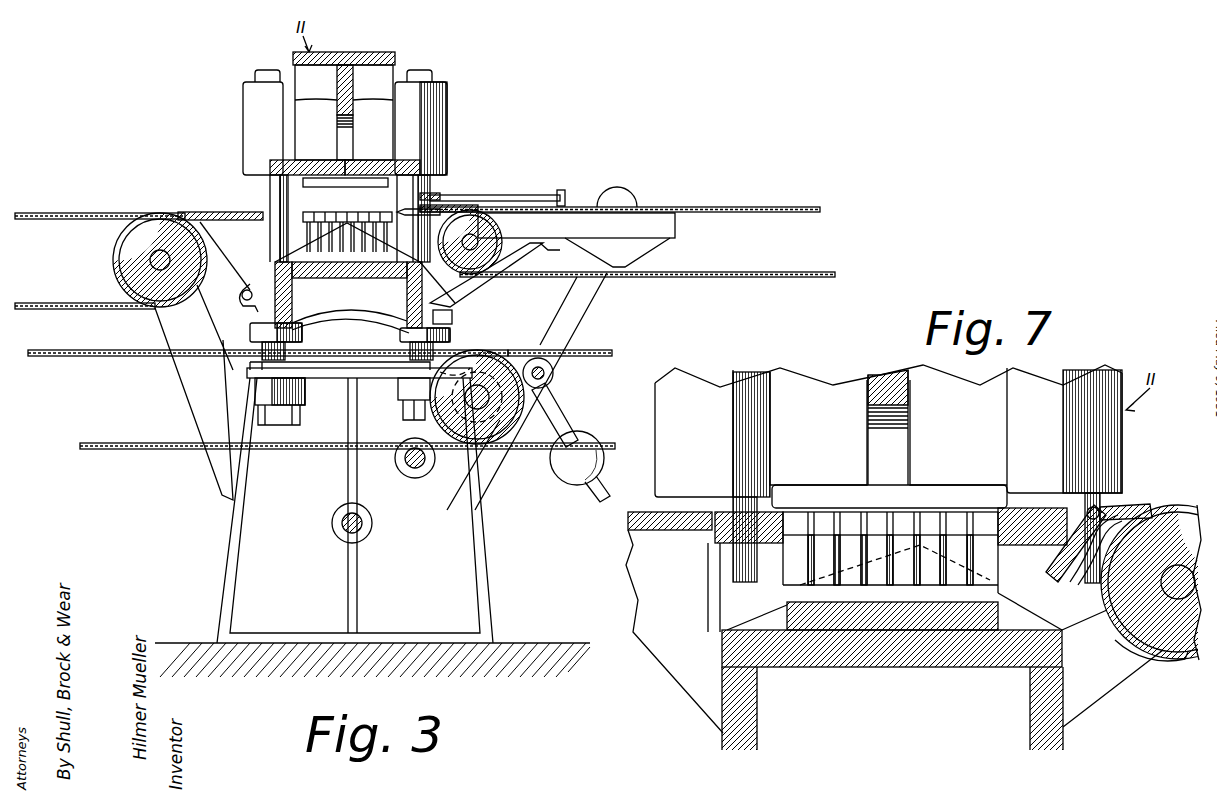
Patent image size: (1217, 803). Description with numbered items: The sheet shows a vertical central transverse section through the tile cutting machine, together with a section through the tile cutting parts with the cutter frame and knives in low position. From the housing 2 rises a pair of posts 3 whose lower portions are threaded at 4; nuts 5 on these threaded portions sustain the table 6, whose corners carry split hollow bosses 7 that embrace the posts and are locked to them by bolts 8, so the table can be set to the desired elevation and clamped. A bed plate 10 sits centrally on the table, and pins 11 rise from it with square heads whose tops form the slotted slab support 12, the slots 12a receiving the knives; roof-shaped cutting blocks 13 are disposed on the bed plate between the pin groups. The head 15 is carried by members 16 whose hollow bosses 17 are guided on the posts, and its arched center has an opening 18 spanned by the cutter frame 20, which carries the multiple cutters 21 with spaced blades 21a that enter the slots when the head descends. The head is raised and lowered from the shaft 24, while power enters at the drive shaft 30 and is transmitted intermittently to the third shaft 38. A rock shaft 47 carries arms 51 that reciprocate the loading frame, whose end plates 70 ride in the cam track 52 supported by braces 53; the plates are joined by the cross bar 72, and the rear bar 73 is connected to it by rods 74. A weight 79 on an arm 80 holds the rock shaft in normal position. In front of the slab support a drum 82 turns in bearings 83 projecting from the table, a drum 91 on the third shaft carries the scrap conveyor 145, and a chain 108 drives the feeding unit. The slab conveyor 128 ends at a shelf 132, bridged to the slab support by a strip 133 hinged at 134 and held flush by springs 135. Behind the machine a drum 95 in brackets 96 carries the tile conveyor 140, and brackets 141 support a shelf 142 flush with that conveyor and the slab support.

In FIG. 3, the housing 2 is at (252, 575).
In FIG. 3, the posts 3 is at (422, 70).
In FIG. 7, the posts 3 is at (927, 476).
In FIG. 3, the threaded portion 4 is at (403, 338).
In FIG. 3, the nuts 5 is at (302, 333).
In FIG. 3, the table 6 is at (366, 268).
In FIG. 7, the table 6 is at (962, 667).
In FIG. 3, the split hollow bosses 7 is at (248, 310).
In FIG. 3, the bolts 8 is at (242, 294).
In FIG. 7, the bed plate 10 is at (855, 630).
In FIG. 3, the pins 11 is at (312, 233).
In FIG. 7, the pins 11 is at (975, 578).
In FIG. 3, the slab support 12 is at (318, 214).
In FIG. 7, the slab support 12 is at (968, 520).
In FIG. 7, the slots 12a is at (808, 522).
In FIG. 3, the cutting blocks 13 is at (332, 266).
In FIG. 7, the cutting blocks 13 is at (775, 607).
In FIG. 3, the head 15 is at (376, 52).
In FIG. 7, the members 16 is at (888, 428).
In FIG. 3, the hollow bosses 17 is at (243, 133).
In FIG. 7, the hollow bosses 17 is at (888, 432).
In FIG. 3, the opening 18 is at (353, 130).
In FIG. 7, the opening 18 is at (910, 436).
In FIG. 3, the cutter frame 20 is at (319, 160).
In FIG. 7, the cutter frame 20 is at (715, 540).
In FIG. 3, the multiple cutters 21 is at (370, 160).
In FIG. 7, the multiple cutters 21 is at (1020, 505).
In FIG. 3, the blades 21a is at (332, 188).
In FIG. 7, the blades 21a is at (890, 508).
In FIG. 3, the shaft 24 is at (372, 523).
In FIG. 3, the drive shaft 30 is at (420, 478).
In FIG. 3, the third shaft 38 is at (465, 395).
In FIG. 3, the rock shaft 47 is at (553, 373).
In FIG. 3, the arms 51 is at (580, 308).
In FIG. 3, the cam track 52 is at (576, 212).
In FIG. 3, the braces 53 is at (525, 250).
In FIG. 3, the end plates 70 is at (648, 246).
In FIG. 3, the cross bar 72 is at (562, 190).
In FIG. 3, the bar 73 is at (440, 196).
In FIG. 3, the rods 74 is at (508, 195).
In FIG. 3, the weight 79 is at (565, 470).
In FIG. 3, the arm 80 is at (567, 415).
In FIG. 3, the drum 82 is at (490, 238).
In FIG. 7, the drum 82 is at (1147, 632).
In FIG. 3, the bearings 83 is at (410, 285).
In FIG. 7, the bearings 83 is at (1110, 683).
In FIG. 3, the drum 91 is at (435, 427).
In FIG. 3, the drum 95 is at (112, 258).
In FIG. 3, the brackets 96 is at (185, 391).
In FIG. 3, the chain 108 is at (602, 350).
In FIG. 3, the slab conveyor 128 is at (740, 207).
In FIG. 7, the slab conveyor 128 is at (1180, 662).
In FIG. 3, the shelf 132 is at (462, 206).
In FIG. 7, the shelf 132 is at (1130, 512).
In FIG. 3, the strip 133 is at (404, 210).
In FIG. 7, the strip 133 is at (1060, 568).
In FIG. 7, the hinge 134 is at (1100, 512).
In FIG. 3, the springs 135 is at (356, 245).
In FIG. 7, the springs 135 is at (1075, 584).
In FIG. 3, the tile conveyor 140 is at (105, 213).
In FIG. 3, the brackets 141 is at (200, 218).
In FIG. 7, the brackets 141 is at (636, 578).
In FIG. 3, the shelf 142 is at (222, 212).
In FIG. 7, the shelf 142 is at (628, 525).
In FIG. 3, the scrap conveyor 145 is at (128, 350).